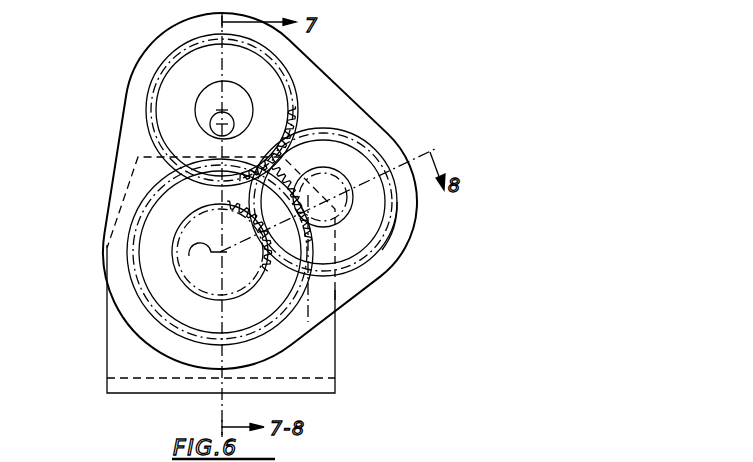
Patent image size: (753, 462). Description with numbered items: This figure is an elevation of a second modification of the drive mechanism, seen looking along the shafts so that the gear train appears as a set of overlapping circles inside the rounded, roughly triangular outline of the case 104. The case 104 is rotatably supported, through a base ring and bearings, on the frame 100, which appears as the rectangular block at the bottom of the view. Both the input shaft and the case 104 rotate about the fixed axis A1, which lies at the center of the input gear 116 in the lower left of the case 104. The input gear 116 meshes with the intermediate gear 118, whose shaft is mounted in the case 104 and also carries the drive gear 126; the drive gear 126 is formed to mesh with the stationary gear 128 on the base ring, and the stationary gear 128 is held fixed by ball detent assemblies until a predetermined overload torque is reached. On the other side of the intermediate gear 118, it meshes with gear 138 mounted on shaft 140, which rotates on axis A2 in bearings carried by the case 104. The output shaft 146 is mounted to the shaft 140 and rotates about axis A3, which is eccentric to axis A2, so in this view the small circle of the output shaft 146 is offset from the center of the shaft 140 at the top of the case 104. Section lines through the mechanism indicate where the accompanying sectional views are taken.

The frame 100 is at (107, 358).
The case 104 is at (395, 142).
The input gear 116 is at (178, 291).
The intermediate gear 118 is at (240, 347).
The drive gear 126 is at (362, 230).
The stationary gear 128 is at (337, 290).
The gear 138 is at (282, 118).
The shaft 140 is at (243, 100).
The output shaft 146 is at (211, 131).
The fixed axis A1 is at (207, 260).
The axis A2 is at (218, 110).
The axis A3 is at (223, 127).